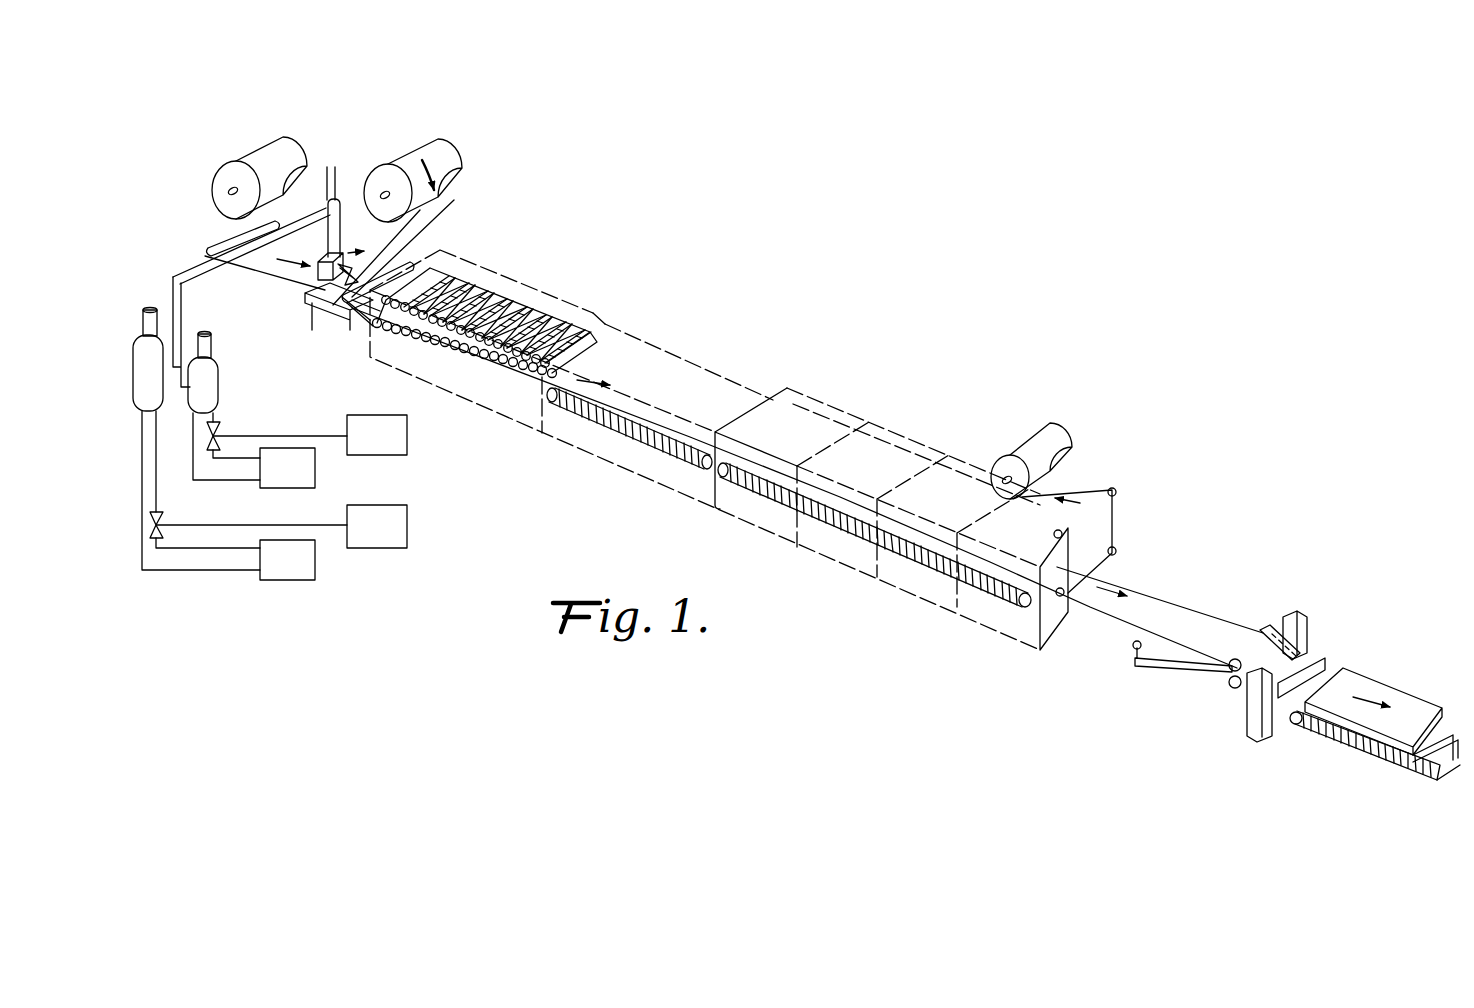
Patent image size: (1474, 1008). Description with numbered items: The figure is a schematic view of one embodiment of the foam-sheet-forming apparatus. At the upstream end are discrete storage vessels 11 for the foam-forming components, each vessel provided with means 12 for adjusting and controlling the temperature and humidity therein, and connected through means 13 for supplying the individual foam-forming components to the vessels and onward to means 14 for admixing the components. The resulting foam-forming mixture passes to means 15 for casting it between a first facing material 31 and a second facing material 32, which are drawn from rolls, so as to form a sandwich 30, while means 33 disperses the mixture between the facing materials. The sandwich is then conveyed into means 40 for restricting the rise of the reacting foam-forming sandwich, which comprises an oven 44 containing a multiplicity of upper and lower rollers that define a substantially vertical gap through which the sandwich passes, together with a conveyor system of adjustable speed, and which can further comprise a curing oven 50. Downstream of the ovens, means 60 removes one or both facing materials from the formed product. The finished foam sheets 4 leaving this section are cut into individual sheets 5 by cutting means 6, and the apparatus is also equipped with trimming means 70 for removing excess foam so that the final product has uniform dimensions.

The finished foam sheets 4 is at (1198, 613).
The individual sheets 5 is at (1390, 697).
The cutting means 6 is at (1283, 627).
The discrete storage vessels 11 is at (217, 370).
The means for adjusting and controlling the temperature and humidity 12 is at (393, 520).
The means for supplying individual foam-forming components 13 is at (196, 268).
The means for admixing the components 14 is at (338, 250).
The means for casting the foam-forming mixture 15 is at (312, 292).
The sandwich 30 is at (507, 370).
The first facing material 31 is at (245, 258).
The second facing material 32 is at (450, 200).
The means for dispersing the mixture 33 is at (330, 312).
The means for restricting the rise of the reacting foam-forming sandwich 40 is at (640, 347).
The oven 44 is at (513, 297).
The curing oven 50 is at (835, 563).
The means for removing one or both facing materials 60 is at (1117, 550).
The trimming means 70 is at (1230, 677).